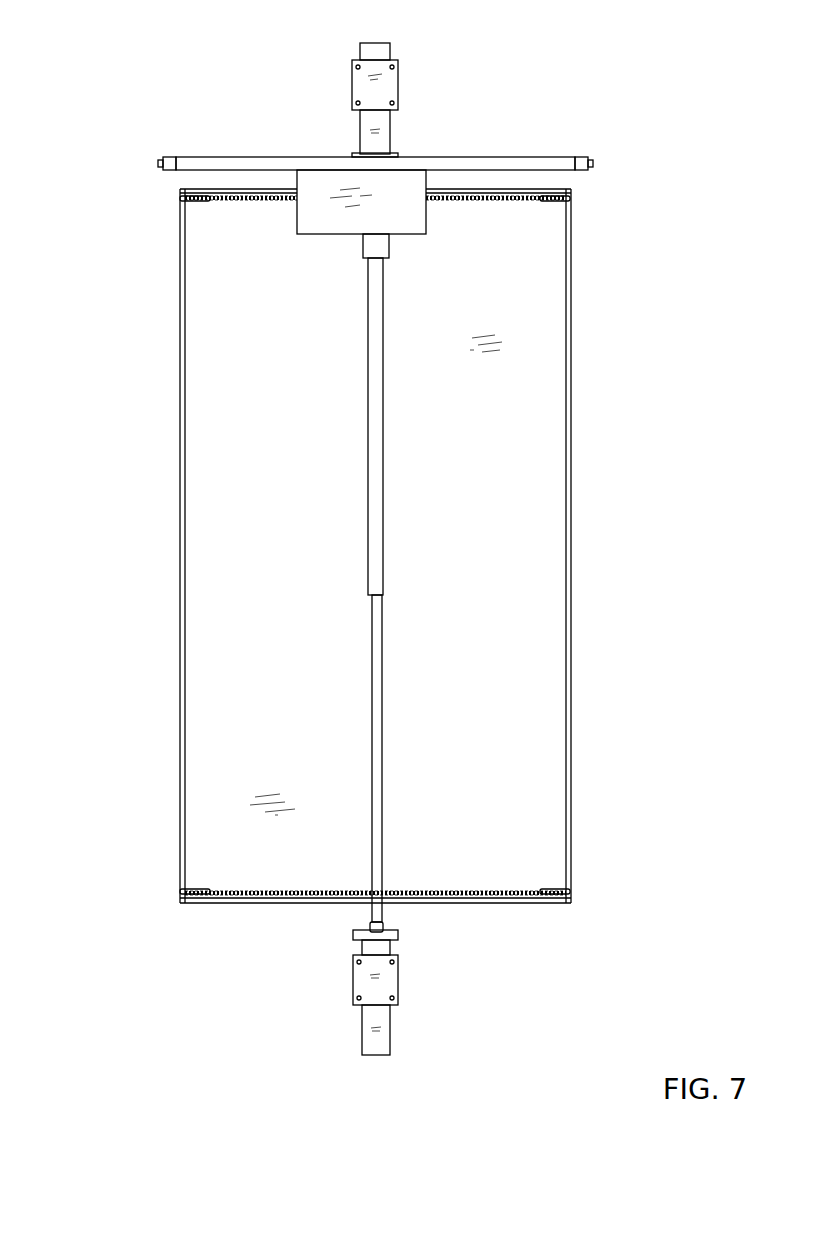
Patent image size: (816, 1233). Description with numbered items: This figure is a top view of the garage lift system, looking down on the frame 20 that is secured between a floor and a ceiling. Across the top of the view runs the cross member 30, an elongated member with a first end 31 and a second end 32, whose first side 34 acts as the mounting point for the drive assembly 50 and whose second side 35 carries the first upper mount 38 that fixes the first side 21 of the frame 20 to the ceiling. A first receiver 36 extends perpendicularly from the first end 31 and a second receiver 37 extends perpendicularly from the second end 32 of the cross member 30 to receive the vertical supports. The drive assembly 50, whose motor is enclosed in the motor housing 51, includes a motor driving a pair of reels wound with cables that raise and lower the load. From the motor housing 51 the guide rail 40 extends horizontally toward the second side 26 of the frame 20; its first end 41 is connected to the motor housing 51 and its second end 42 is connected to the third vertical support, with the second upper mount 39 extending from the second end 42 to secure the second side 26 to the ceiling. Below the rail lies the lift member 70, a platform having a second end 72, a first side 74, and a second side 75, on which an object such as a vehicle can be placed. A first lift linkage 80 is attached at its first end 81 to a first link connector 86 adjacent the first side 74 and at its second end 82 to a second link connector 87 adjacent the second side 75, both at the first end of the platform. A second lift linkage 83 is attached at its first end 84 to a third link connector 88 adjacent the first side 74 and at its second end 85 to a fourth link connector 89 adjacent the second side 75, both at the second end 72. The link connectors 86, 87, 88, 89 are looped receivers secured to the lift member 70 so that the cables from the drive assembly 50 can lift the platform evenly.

The frame 20 is at (490, 152).
The first side of the frame 21 is at (463, 157).
The second side of the frame 26 is at (365, 945).
The cross member 30 is at (244, 168).
The first end of the cross member 31 is at (567, 143).
The second end of the cross member 32 is at (182, 157).
The first side of the cross member 34 is at (197, 172).
The second side of the cross member 35 is at (349, 153).
The first receiver 36 is at (583, 168).
The second receiver 37 is at (165, 152).
The first upper mount 38 is at (366, 92).
The second upper mount 39 is at (368, 987).
The guide rail 40 is at (368, 513).
The first end of the guide rail 41 is at (386, 240).
The second end of the guide rail 42 is at (386, 918).
The drive assembly 50 is at (309, 240).
The motor housing 51 is at (312, 218).
The lift member 70 is at (531, 525).
The second end of the lift member 72 is at (510, 185).
The first side of the lift member 74 is at (569, 665).
The second side of the lift member 75 is at (181, 680).
The first lift linkage 80 is at (470, 204).
The first end of the first lift linkage 81 is at (554, 205).
The second end of the first lift linkage 82 is at (214, 205).
The second lift linkage 83 is at (468, 889).
The first end of the second lift linkage 84 is at (527, 889).
The second end of the second lift linkage 85 is at (226, 890).
The first link connector 86 is at (529, 204).
The second link connector 87 is at (198, 203).
The third link connector 88 is at (557, 889).
The fourth link connector 89 is at (195, 889).